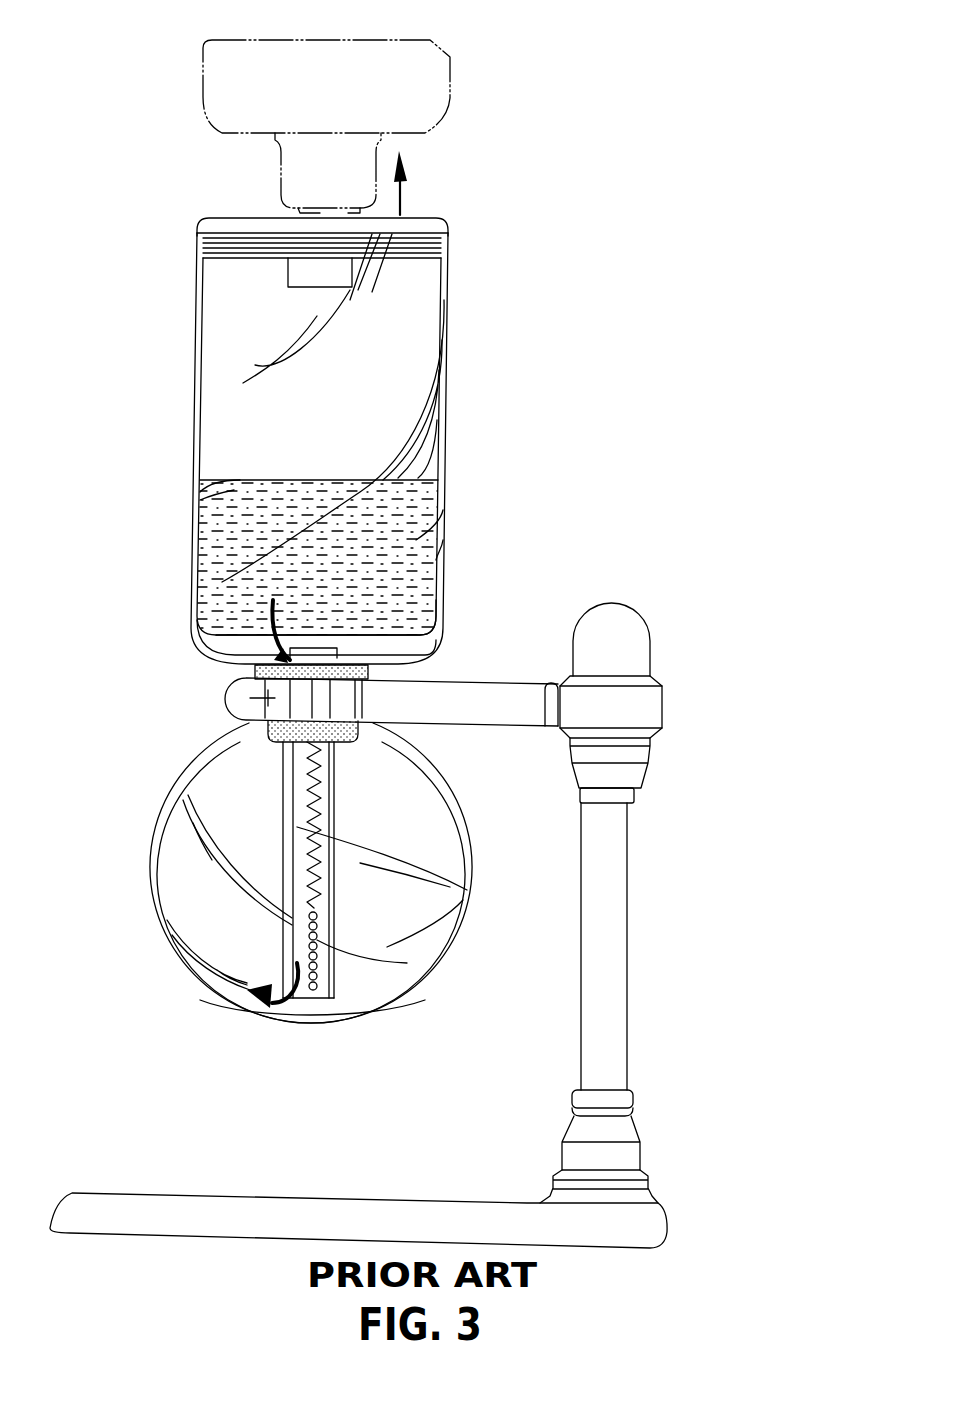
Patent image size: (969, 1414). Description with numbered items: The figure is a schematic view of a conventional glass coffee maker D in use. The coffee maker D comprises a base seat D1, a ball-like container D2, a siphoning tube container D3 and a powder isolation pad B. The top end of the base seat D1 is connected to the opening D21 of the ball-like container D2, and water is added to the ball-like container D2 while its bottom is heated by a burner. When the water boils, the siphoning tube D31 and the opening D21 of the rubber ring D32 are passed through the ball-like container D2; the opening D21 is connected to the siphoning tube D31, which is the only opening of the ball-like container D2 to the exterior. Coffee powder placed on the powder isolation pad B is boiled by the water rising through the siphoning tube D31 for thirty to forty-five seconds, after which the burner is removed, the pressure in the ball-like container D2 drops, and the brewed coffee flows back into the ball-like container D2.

The coffee maker D is at (332, 531).
The base seat D1 is at (627, 943).
The ball-like container D2 is at (160, 925).
The opening D21 is at (245, 698).
The siphoning tube container D3 is at (450, 98).
The siphoning tube D31 is at (283, 812).
The rubber ring D32 is at (255, 668).
The powder isolation pad B is at (390, 645).